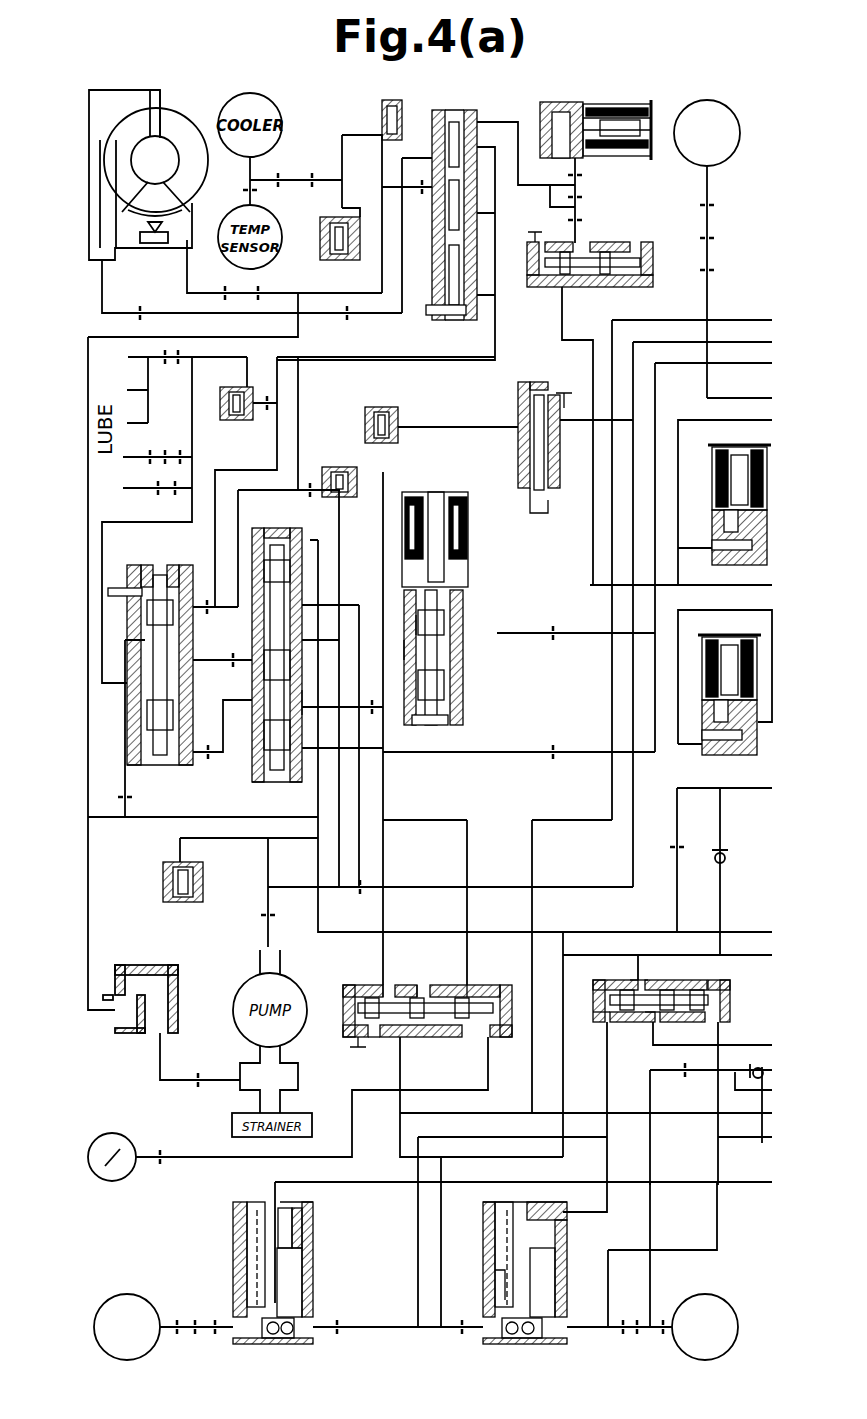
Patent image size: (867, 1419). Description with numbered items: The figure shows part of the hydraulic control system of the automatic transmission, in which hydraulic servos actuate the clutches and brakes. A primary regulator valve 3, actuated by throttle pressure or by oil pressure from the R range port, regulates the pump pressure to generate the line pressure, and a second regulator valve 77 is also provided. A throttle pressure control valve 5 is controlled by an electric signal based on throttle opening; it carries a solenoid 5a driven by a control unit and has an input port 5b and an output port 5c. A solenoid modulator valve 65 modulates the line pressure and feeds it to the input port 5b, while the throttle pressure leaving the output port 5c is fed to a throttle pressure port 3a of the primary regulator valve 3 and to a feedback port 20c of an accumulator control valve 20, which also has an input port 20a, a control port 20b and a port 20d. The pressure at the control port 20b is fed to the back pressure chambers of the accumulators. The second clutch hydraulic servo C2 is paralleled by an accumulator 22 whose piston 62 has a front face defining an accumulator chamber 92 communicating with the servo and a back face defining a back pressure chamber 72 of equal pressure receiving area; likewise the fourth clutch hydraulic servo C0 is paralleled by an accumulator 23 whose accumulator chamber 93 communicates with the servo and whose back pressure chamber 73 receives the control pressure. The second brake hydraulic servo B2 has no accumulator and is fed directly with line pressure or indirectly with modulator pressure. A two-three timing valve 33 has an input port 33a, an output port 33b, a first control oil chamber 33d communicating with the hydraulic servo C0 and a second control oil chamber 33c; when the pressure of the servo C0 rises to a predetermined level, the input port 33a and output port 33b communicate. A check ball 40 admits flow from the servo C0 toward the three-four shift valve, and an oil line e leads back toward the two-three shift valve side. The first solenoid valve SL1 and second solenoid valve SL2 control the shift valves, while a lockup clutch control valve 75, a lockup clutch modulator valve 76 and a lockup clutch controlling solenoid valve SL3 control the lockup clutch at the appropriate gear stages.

The lockup clutch control valve 75 is at (462, 110).
The lockup clutch controlling solenoid valve SL3 is at (592, 104).
The second brake hydraulic servo B2 is at (707, 249).
The lockup clutch modulator valve 76 is at (596, 242).
The primary regulator valve 3 is at (263, 530).
The throttle pressure port 3a is at (302, 703).
The throttle pressure control valve 5 is at (448, 492).
The solenoid 5a is at (462, 540).
The input port 5b is at (418, 625).
The output port 5c is at (404, 650).
The solenoid modulator valve 65 is at (548, 490).
The second regulator valve 77 is at (127, 582).
The second solenoid valve SL2 is at (725, 502).
The first solenoid valve SL1 is at (725, 682).
The input port 33a is at (638, 980).
The oil line e is at (708, 955).
The 2-3 timing valve 33 is at (730, 992).
The first control oil chamber 33d is at (722, 1022).
The output port 33b is at (648, 1022).
The second control oil chamber 33c is at (600, 1022).
The check ball 40 is at (761, 1123).
The accumulator control valve 20 is at (510, 1015).
The input port 20a is at (385, 990).
The control port 20b is at (402, 1037).
The feedback port 20c is at (468, 990).
The port of relay valve 20d is at (418, 990).
The second clutch hydraulic servo C2 is at (163, 1327).
The piston 62 is at (240, 1278).
The back pressure chamber 72 is at (285, 1224).
The accumulator 22 is at (315, 1247).
The accumulator chamber 92 is at (293, 1294).
The fourth clutch hydraulic servo C0 is at (652, 1327).
The accumulator 23 is at (483, 1242).
The back pressure chamber 73 is at (540, 1204).
The accumulator chamber 93 is at (545, 1290).